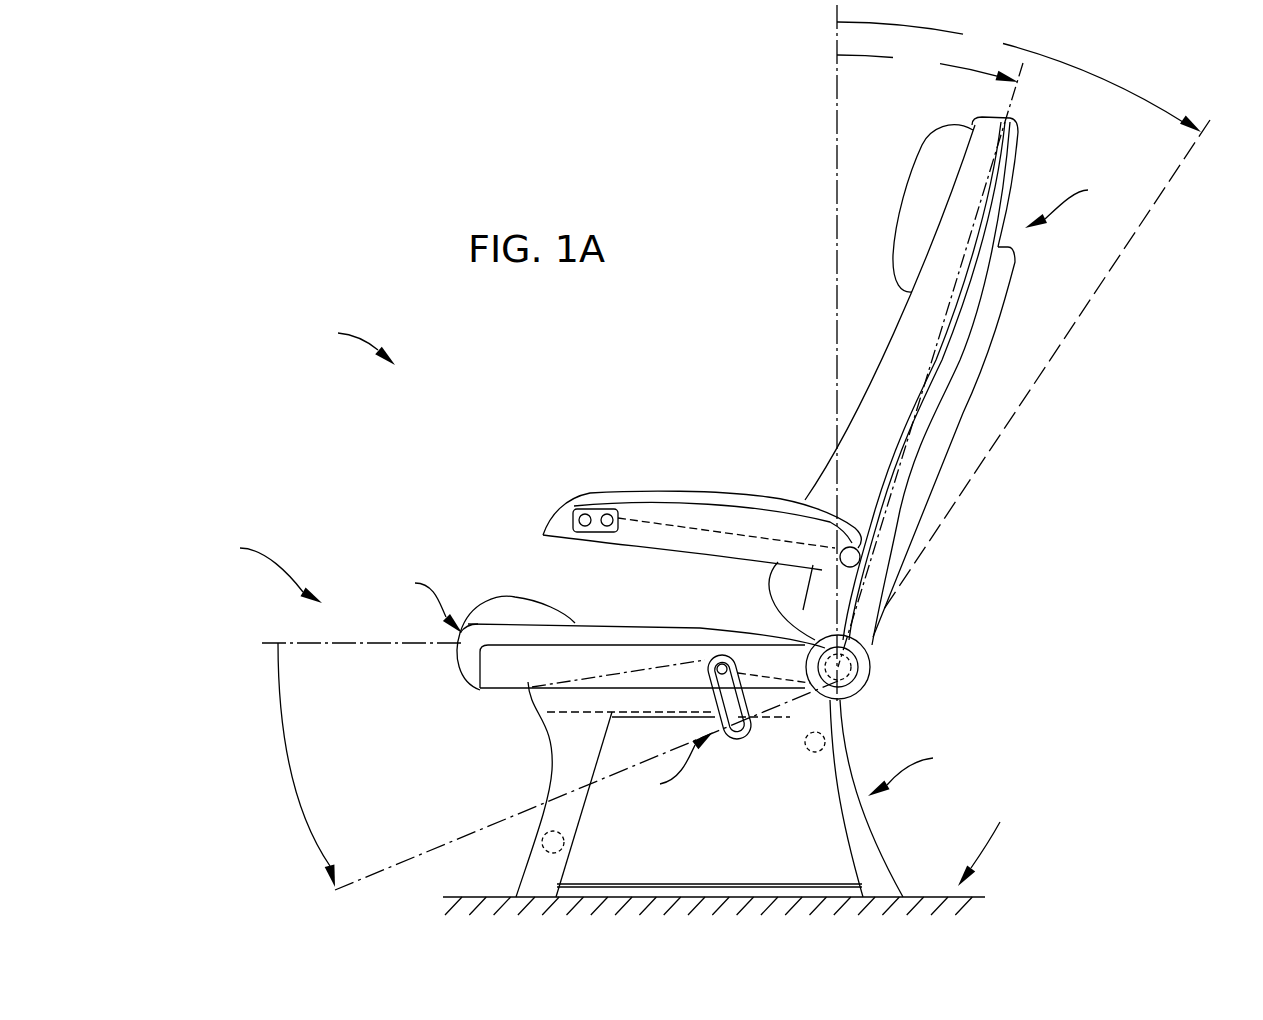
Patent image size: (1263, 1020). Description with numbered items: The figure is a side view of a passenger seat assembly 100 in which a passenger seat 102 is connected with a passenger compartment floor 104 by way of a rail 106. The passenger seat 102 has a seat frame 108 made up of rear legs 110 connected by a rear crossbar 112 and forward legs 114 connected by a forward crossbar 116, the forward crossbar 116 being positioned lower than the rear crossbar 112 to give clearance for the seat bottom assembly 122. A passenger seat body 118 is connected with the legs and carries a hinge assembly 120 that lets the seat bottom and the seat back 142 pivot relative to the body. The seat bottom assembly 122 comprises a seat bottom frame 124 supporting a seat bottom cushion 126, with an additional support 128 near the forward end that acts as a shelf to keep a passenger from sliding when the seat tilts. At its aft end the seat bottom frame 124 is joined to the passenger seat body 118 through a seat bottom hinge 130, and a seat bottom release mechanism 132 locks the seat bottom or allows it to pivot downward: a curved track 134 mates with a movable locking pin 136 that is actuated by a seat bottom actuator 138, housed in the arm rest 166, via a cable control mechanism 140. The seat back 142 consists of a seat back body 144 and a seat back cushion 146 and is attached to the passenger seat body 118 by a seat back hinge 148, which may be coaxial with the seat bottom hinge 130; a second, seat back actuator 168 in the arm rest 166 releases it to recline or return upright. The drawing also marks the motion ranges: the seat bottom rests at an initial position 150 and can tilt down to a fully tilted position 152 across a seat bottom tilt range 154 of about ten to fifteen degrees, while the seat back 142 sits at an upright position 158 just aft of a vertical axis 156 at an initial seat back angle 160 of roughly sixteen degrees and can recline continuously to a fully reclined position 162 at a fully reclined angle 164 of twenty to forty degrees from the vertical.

The passenger seat assembly 100 is at (344, 344).
The passenger seat 102 is at (257, 572).
The passenger compartment floor 104 is at (738, 862).
The rail 106 is at (765, 890).
The seat frame 108 is at (918, 769).
The rear legs 110 is at (855, 838).
The rear crossbar 112 is at (803, 755).
The forward legs 114 is at (542, 856).
The forward crossbar 116 is at (567, 838).
The passenger seat body 118 is at (872, 548).
The hinge assembly 120 is at (872, 686).
The seat bottom assembly 122 is at (428, 633).
The seat bottom frame 124 is at (492, 680).
The seat bottom cushion 126 is at (620, 633).
The additional support 128 is at (492, 600).
The seat bottom hinge 130 is at (845, 701).
The seat bottom release mechanism 132 is at (667, 767).
The curved track 134 is at (732, 752).
The locking pin 136 is at (707, 653).
The seat bottom actuator 138 is at (605, 513).
The cable control mechanism 140 is at (683, 520).
The seat back 142 is at (1074, 204).
The seat back body 144 is at (1005, 167).
The seat back cushion 146 is at (878, 372).
The seat back hinge 148 is at (870, 664).
The initial position 150 is at (370, 643).
The fully tilted position 152 is at (432, 848).
The seat bottom tilt range 154 is at (305, 765).
The vertical axis 156 is at (837, 100).
The upright position 158 is at (1012, 106).
The initial seat back angle 160 is at (927, 68).
The fully reclined position 162 is at (1172, 183).
The fully reclined angle 164 is at (1019, 77).
The arm rest 166 is at (727, 493).
The seat back actuator 168 is at (580, 511).